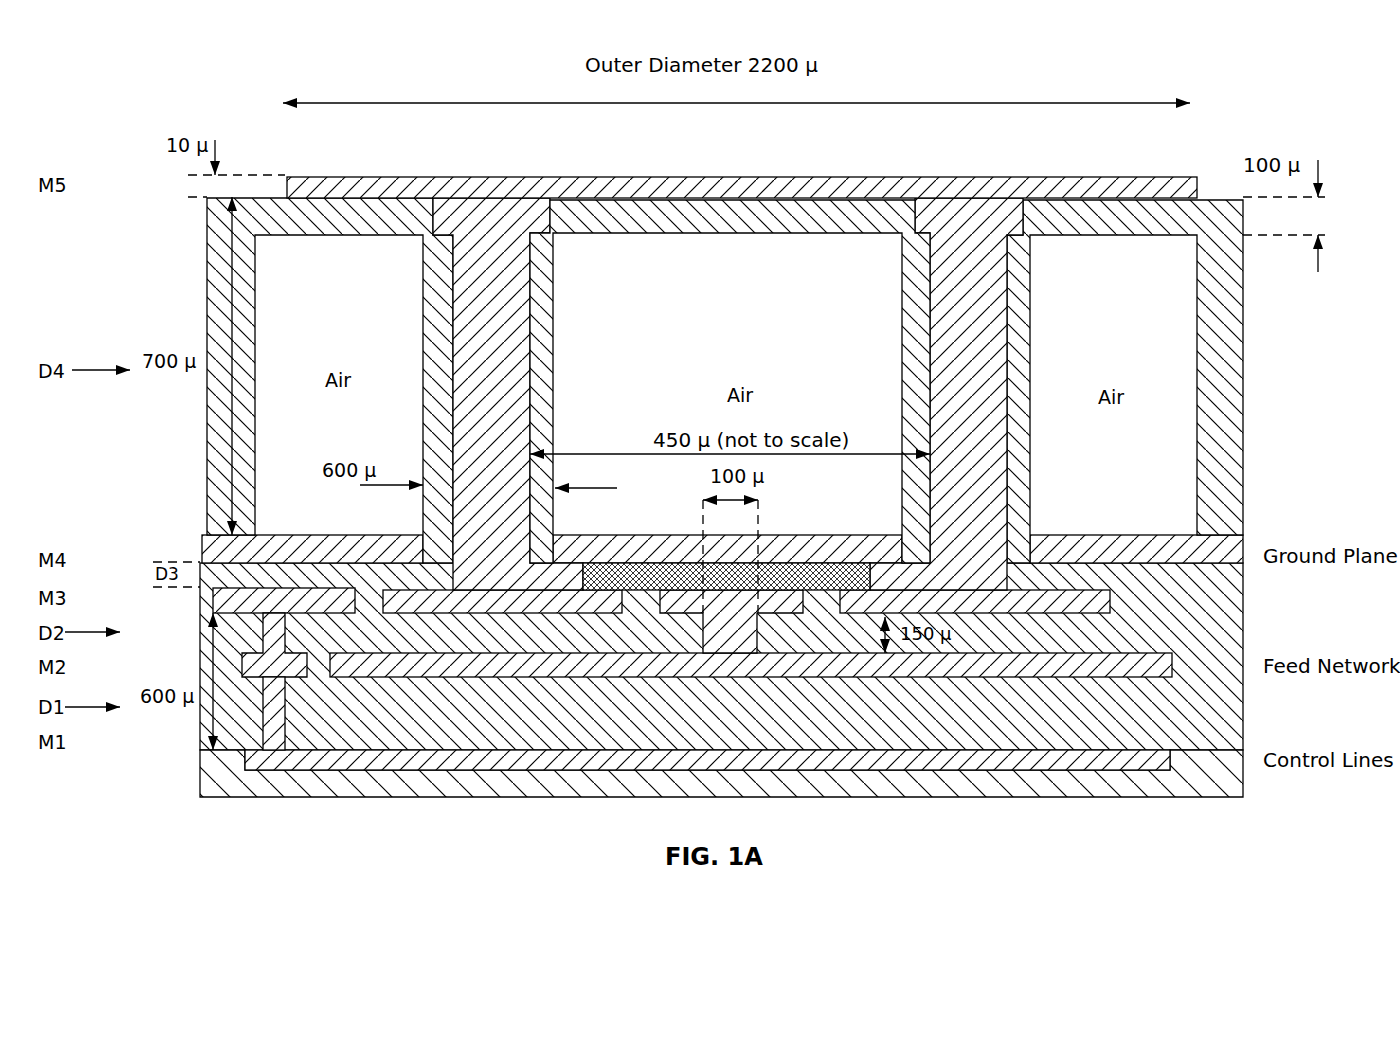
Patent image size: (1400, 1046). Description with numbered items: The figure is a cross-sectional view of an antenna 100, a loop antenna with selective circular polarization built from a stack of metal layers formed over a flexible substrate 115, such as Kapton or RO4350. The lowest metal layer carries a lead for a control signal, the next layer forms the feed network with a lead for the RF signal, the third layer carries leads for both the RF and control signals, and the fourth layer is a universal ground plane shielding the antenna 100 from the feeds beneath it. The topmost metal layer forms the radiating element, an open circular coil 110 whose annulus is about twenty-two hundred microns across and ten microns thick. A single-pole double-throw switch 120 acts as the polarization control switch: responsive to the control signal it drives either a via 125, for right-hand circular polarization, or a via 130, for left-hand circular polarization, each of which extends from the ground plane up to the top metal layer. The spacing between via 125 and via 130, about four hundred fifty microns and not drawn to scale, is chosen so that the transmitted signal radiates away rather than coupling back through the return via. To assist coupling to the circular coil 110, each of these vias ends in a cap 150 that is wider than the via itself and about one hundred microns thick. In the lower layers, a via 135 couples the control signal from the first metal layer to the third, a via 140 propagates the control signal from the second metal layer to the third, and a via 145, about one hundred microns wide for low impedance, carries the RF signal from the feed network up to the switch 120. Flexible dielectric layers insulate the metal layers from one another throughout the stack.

The antenna 100 is at (688, 462).
The open circular coil 110 is at (349, 177).
The flexible substrate 115 is at (973, 784).
The single-pole double-throw switch 120 is at (808, 562).
The via 125 is at (533, 381).
The via 130 is at (927, 339).
The via 135 is at (283, 700).
The via 140 is at (278, 628).
The via 145 is at (700, 597).
The cap 150 is at (553, 221).